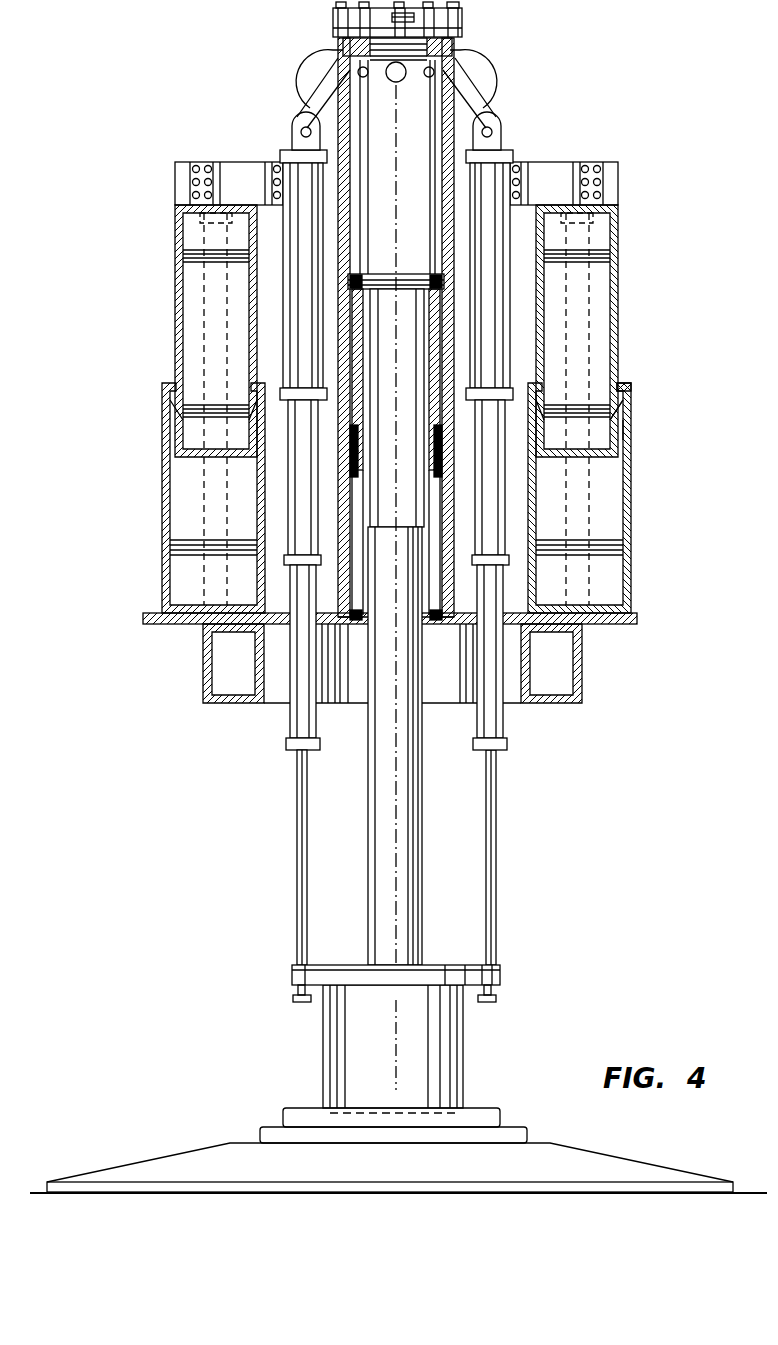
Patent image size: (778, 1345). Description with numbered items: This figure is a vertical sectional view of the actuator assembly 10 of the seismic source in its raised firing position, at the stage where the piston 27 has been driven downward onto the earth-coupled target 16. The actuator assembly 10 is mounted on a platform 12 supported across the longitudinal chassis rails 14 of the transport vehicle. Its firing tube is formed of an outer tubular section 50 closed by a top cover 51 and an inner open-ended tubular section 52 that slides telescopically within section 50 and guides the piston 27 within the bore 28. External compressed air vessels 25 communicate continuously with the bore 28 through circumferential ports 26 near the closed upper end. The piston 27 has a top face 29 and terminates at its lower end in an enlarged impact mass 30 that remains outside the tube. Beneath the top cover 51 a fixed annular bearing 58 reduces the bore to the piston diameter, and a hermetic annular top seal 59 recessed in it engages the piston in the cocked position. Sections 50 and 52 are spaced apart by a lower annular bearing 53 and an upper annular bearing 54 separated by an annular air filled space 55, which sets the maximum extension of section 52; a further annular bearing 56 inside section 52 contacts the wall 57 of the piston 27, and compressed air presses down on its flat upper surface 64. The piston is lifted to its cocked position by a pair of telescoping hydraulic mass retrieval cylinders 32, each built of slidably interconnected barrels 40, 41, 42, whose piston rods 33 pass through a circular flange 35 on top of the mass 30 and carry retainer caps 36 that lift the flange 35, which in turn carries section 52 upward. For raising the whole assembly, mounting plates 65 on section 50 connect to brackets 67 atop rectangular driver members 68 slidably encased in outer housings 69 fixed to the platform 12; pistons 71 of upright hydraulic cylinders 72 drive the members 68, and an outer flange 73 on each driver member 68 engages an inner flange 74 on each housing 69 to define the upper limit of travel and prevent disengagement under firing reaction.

The actuator assembly 10 is at (512, 62).
The platform 12 is at (636, 626).
The longitudinal chassis rails 14 is at (582, 682).
The target 16 is at (597, 1152).
The external compressed air vessels 25 is at (300, 113).
The circumferential ports 26 is at (355, 70).
The piston 27 is at (368, 840).
The bore 28 is at (455, 110).
The top face 29 is at (413, 525).
The impact mass 30 is at (466, 1080).
The telescoping hydraulic mass retrieval cylinders 32 is at (518, 160).
The piston rods 33 is at (493, 866).
The circular flange 35 is at (500, 973).
The retainer caps 36 is at (494, 1003).
The barrel 40 is at (512, 336).
The barrel 41 is at (495, 523).
The barrel 42 is at (504, 712).
The outer tubular section 50 is at (292, 134).
The top cover 51 is at (333, 31).
The inner tubular section 52 is at (418, 298).
The lower annular bearing 53 is at (342, 458).
The upper annular bearing 54 is at (343, 313).
The annular air filled space 55 is at (265, 372).
The annular bearing 56 is at (354, 503).
The wall 57 is at (424, 672).
The fixed annular bearing 58 is at (458, 56).
The hermetic annular top seal 59 is at (459, 29).
The flat upper surface 64 is at (403, 448).
The mounting plates 65 is at (501, 142).
The brackets 67 is at (232, 162).
The driver members 68 is at (177, 352).
The outer housings 69 is at (162, 560).
The pistons 71 is at (207, 300).
The upright hydraulic cylinders 72 is at (600, 378).
The outer transverse circumferential flange 73 is at (626, 419).
The inner circumferential flange 74 is at (628, 405).